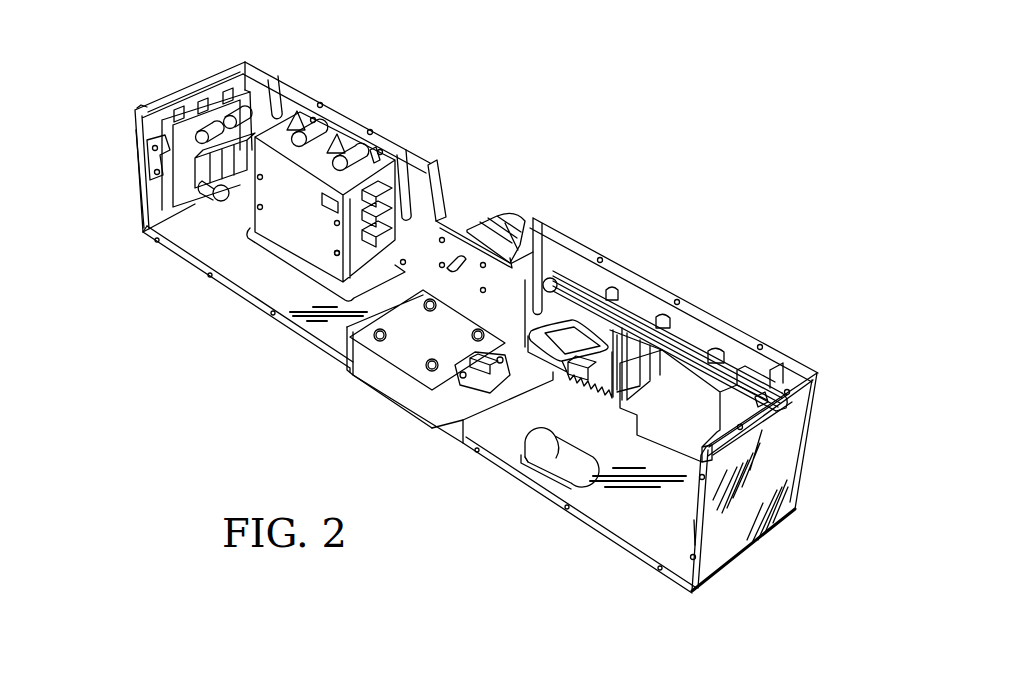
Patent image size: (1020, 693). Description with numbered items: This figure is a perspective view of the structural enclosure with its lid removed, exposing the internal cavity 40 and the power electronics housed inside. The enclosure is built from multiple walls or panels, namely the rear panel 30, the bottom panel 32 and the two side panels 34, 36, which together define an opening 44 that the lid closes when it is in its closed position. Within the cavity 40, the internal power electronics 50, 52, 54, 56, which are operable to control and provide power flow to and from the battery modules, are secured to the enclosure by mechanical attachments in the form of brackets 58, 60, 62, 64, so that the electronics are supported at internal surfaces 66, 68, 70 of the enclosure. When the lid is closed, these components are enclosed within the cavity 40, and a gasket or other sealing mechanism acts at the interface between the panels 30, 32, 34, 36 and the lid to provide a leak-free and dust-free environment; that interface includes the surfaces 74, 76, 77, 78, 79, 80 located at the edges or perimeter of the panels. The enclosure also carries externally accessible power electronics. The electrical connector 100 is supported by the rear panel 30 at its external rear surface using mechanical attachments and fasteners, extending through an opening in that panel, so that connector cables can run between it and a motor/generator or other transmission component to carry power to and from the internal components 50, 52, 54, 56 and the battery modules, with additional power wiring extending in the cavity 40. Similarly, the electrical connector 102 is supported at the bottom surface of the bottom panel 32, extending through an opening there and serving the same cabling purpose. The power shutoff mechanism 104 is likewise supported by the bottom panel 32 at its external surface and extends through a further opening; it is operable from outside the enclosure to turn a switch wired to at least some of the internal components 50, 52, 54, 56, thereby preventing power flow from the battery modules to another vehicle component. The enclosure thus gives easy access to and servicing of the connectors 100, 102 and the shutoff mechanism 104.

The rear panel 30 is at (420, 200).
The bottom panel 32 is at (288, 290).
The side panel 34 is at (173, 108).
The side panel 36 is at (780, 440).
The internal cavity 40 is at (643, 495).
The opening 44 is at (152, 160).
The internal power electronics 50 is at (170, 190).
The internal power electronics 52 is at (308, 223).
The internal power electronics 54 is at (553, 447).
The internal power electronics 56 is at (548, 350).
The bracket 58 is at (163, 186).
The bracket 60 is at (357, 150).
The bracket 62 is at (547, 473).
The bracket 64 is at (628, 308).
The internal surface 66 is at (245, 120).
The internal surface 68 is at (218, 226).
The internal surface 70 is at (505, 278).
The interface surface 74 is at (720, 320).
The interface surface 76 is at (130, 132).
The interface surface 77 is at (198, 80).
The interface surface 78 is at (690, 522).
The interface surface 79 is at (765, 398).
The interface surface 80 is at (322, 354).
The electrical connector 100 is at (497, 220).
The electrical connector 102 is at (433, 397).
The power shutoff mechanism 104 is at (427, 417).